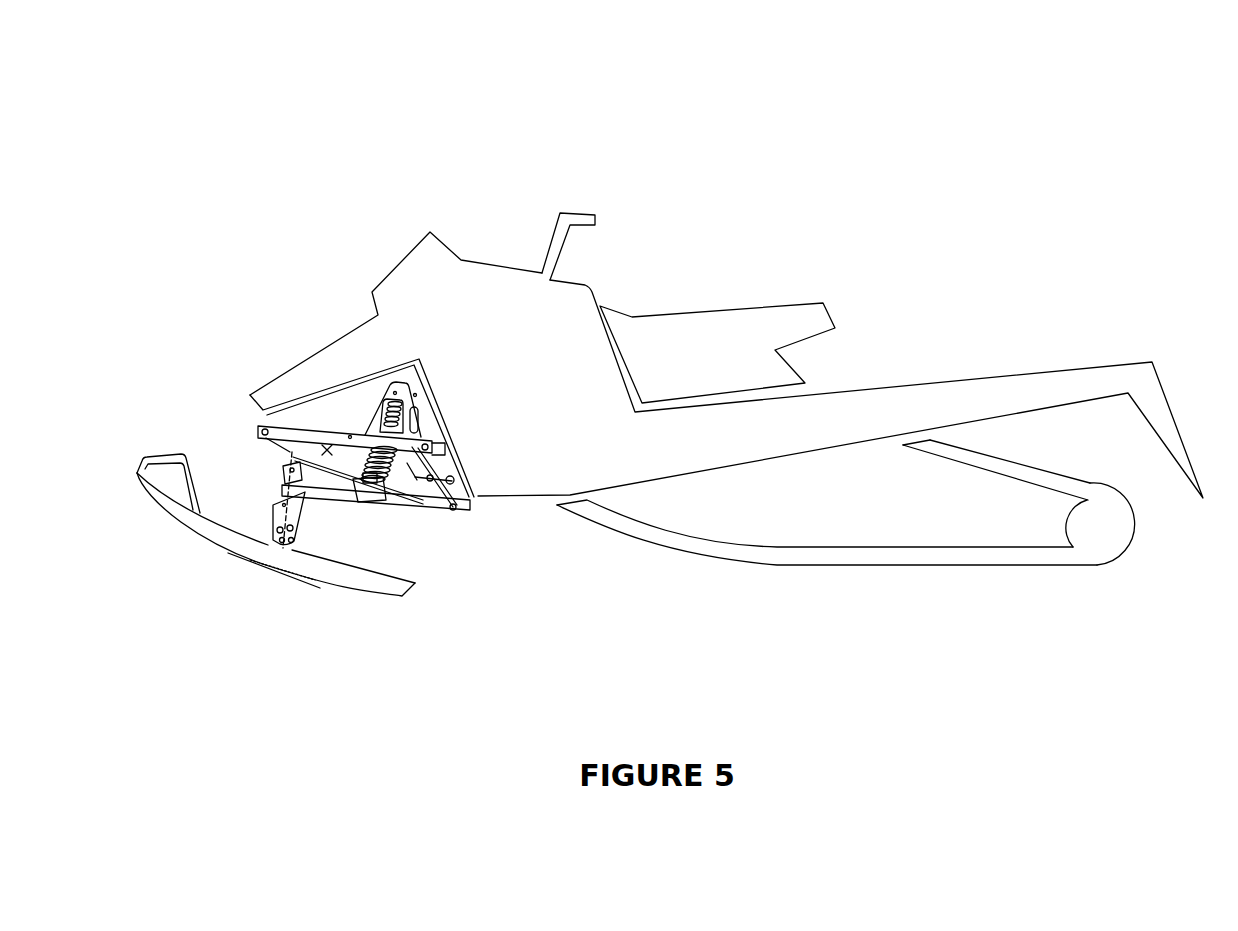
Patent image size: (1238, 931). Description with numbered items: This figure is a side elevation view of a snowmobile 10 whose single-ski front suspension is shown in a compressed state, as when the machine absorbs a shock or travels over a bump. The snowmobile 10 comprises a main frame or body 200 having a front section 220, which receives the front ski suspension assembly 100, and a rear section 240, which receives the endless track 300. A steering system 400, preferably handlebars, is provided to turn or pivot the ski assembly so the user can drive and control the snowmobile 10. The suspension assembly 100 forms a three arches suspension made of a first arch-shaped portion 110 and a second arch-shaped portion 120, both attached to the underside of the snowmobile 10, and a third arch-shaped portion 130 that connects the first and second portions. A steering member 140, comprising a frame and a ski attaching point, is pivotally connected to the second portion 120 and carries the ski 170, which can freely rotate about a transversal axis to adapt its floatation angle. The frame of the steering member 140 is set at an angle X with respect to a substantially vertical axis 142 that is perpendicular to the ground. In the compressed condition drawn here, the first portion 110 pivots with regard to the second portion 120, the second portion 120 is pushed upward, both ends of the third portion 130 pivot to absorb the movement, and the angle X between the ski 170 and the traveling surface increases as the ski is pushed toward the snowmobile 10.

The snowmobile 10 is at (723, 260).
The front ski suspension assembly 100 is at (230, 437).
The first arch-shaped portion 110 is at (268, 430).
The second arch-shaped portion 120 is at (333, 502).
The third arch-shaped portion 130 is at (283, 447).
The steering member 140 is at (300, 528).
The axis 142 is at (292, 468).
The ski 170 is at (227, 543).
The main frame or body 200 is at (732, 457).
The front section 220 is at (483, 480).
The rear section 240 is at (855, 417).
The endless track 300 is at (938, 568).
The steering system 400 is at (577, 205).